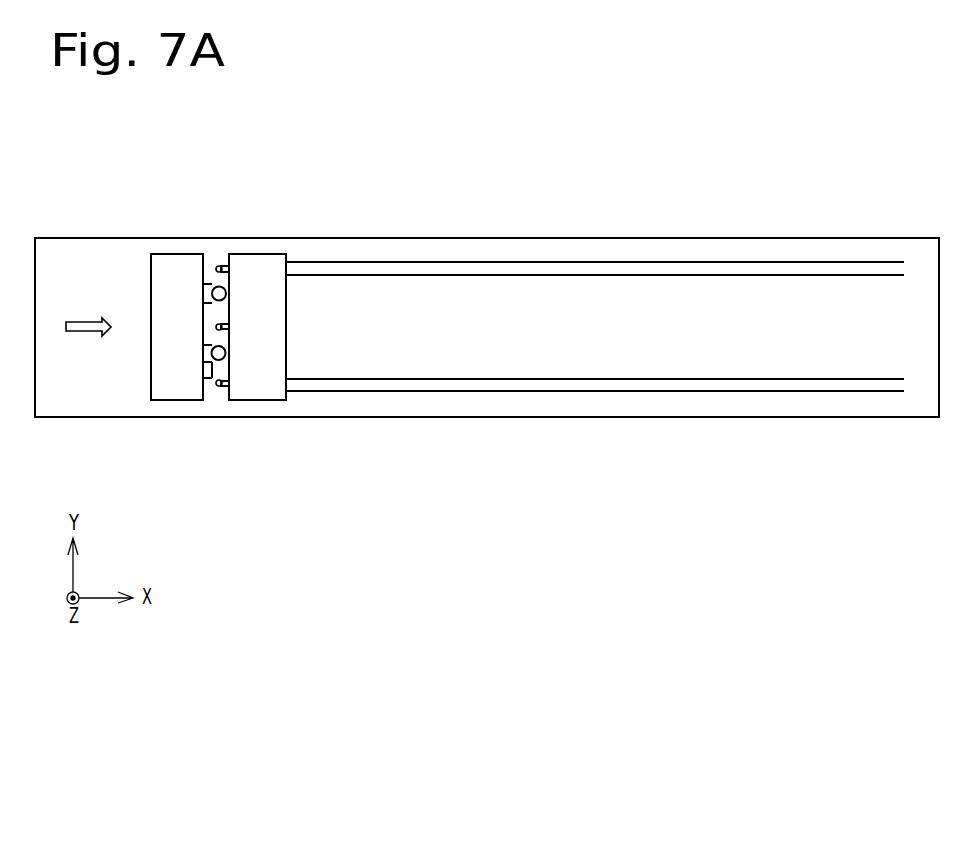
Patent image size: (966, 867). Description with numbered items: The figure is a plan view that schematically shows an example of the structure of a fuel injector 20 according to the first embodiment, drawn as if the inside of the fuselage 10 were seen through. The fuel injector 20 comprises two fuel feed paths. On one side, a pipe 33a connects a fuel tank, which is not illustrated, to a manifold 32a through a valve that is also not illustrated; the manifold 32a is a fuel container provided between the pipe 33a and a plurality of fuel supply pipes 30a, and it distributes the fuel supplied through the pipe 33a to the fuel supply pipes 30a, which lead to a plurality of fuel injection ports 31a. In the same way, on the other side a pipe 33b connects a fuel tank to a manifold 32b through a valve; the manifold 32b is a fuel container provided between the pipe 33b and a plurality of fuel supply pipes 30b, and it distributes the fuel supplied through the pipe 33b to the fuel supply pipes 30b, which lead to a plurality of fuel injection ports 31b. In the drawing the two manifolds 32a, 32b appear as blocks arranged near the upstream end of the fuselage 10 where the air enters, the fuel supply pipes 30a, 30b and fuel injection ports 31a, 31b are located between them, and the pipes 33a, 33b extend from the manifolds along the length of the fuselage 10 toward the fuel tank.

The fuselage 10 is at (750, 247).
The fuel injector 20 is at (284, 184).
The fuel supply pipes 30a is at (222, 265).
The fuel supply pipes 30b is at (207, 362).
The fuel injection ports 31a is at (217, 266).
The fuel injection ports 31b is at (228, 358).
The manifold 32a is at (265, 253).
The manifold 32b is at (173, 400).
The pipe 33a is at (443, 262).
The pipe 33b is at (443, 392).